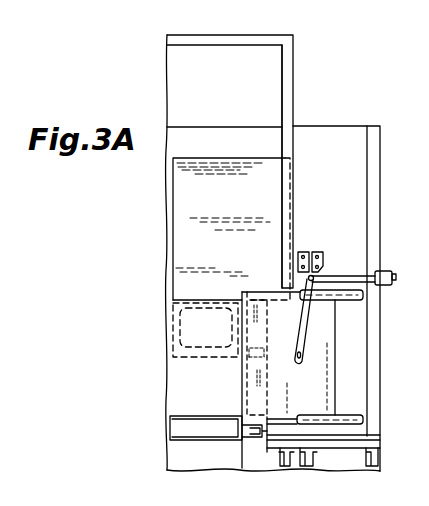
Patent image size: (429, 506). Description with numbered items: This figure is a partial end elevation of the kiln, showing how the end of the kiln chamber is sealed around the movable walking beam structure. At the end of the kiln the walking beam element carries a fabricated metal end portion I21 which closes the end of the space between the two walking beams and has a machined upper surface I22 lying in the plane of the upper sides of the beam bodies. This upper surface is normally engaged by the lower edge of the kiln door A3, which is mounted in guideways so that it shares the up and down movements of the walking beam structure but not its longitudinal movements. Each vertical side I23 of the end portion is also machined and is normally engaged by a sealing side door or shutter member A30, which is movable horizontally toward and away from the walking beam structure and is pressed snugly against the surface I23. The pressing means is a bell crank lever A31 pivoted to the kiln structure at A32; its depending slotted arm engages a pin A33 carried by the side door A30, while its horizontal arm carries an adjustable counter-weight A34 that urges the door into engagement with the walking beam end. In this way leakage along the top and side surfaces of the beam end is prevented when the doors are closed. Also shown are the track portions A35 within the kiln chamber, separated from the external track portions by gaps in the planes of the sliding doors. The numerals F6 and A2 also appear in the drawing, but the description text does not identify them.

The housing frame F6 is at (0, 427).
The kiln door A3 is at (231, 229).
The connector element A2 is at (256, 352).
The sealing side door or shutter member A30 is at (336, 400).
The bell crank lever A31 is at (357, 275).
The pivot A32 is at (323, 252).
The pin A33 is at (301, 362).
The adjustable counter-weight A34 is at (388, 286).
The track portion within the kiln chamber A35 is at (244, 356).
The fabricated metal end portion I21 is at (172, 375).
The machined upper surface I22 is at (189, 303).
The vertical side I23 is at (235, 399).